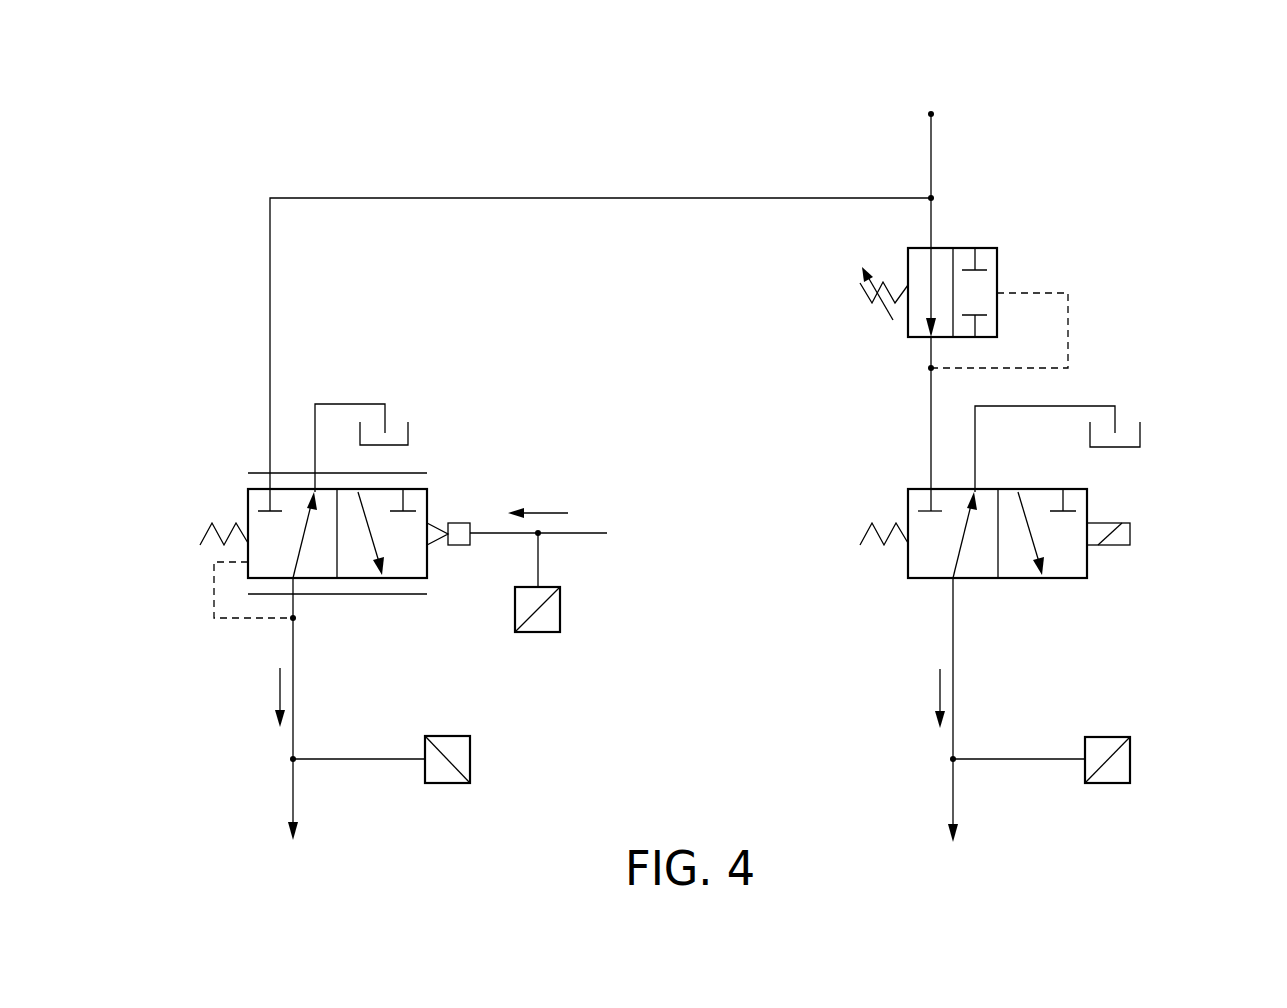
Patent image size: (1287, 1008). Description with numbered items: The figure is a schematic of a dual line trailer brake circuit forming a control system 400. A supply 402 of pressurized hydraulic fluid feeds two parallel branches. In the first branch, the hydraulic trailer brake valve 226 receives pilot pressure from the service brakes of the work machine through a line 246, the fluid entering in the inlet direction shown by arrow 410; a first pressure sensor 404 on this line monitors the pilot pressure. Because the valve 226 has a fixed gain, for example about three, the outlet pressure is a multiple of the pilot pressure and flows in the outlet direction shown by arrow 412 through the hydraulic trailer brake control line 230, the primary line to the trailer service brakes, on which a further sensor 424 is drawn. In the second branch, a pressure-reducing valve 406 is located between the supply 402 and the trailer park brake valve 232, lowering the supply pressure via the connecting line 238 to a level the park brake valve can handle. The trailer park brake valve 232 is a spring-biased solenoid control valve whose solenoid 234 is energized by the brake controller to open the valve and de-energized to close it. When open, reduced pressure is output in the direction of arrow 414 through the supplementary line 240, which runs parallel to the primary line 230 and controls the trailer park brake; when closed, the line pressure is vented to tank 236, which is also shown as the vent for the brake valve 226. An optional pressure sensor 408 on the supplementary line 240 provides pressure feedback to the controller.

The control system 400 is at (132, 172).
The supply 402 is at (931, 114).
The pressure-reducing valve 406 is at (990, 212).
The regulated supply line 238 is at (930, 450).
The hydraulic trailer brake valve 226 is at (203, 505).
The tank 236 is at (408, 433).
The line 246 is at (578, 536).
The arrow 410 is at (547, 513).
The first pressure sensor 404 is at (560, 608).
The hydraulic trailer brake control line 230 is at (293, 795).
The arrow 412 is at (280, 686).
The pressure sensor 424 is at (470, 757).
The trailer park brake valve 232 is at (1170, 527).
The solenoid 234 is at (1118, 547).
The supplementary line 240 is at (953, 795).
The arrow 414 is at (940, 687).
The pressure sensor 408 is at (1130, 758).